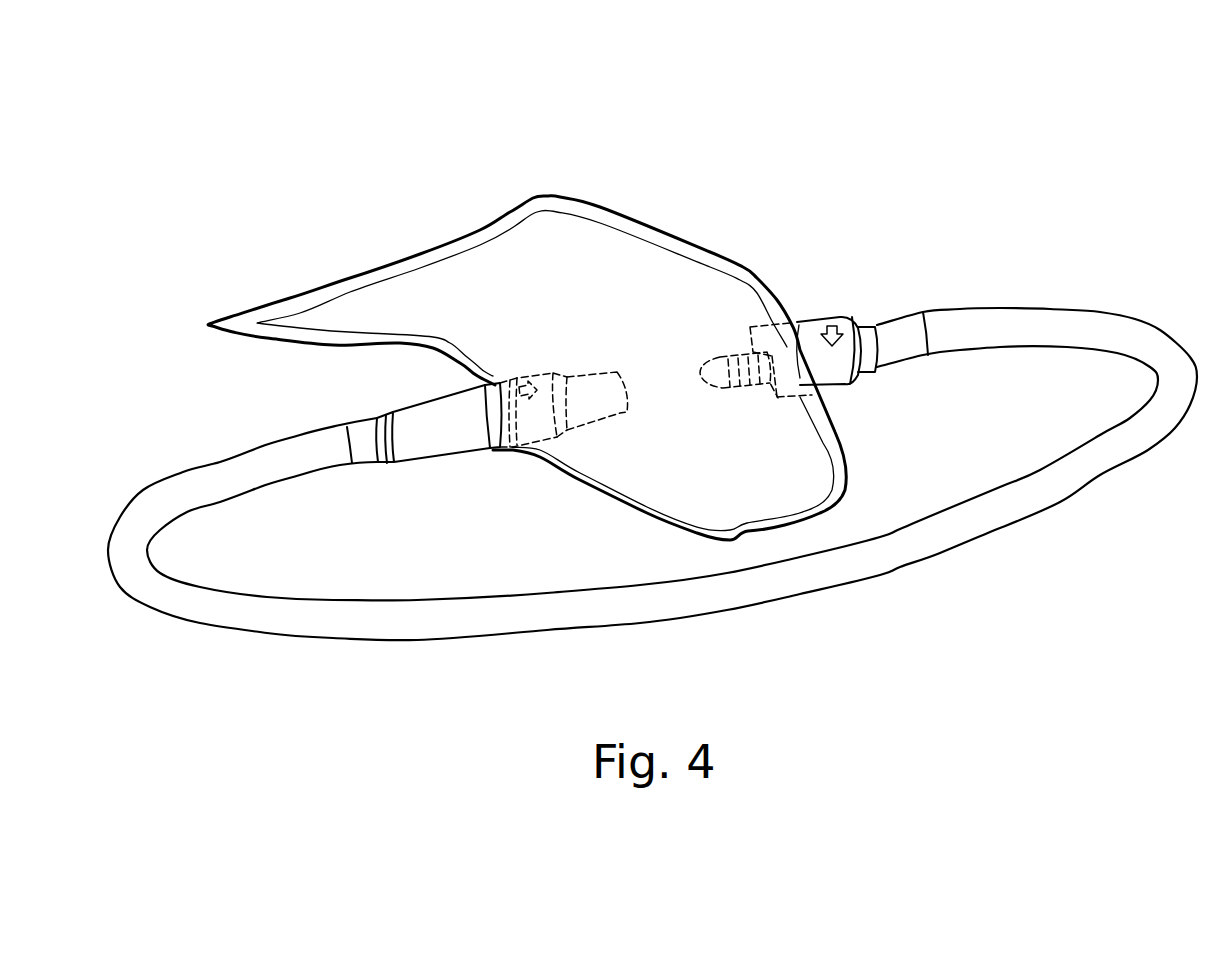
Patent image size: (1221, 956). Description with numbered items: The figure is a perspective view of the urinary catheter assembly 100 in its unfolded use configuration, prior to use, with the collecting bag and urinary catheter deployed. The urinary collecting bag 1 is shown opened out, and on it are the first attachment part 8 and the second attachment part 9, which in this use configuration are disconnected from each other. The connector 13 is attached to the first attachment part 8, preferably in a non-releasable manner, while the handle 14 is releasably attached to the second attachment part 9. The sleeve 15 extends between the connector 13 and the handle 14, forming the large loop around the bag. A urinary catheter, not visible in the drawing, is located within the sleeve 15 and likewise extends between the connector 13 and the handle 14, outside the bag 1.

The urinary catheter assembly 100 is at (652, 366).
The urinary collecting bag 1 is at (707, 247).
The first attachment part 8 is at (533, 430).
The second attachment part 9 is at (785, 312).
The connector 13 is at (425, 443).
The handle 14 is at (850, 317).
The sleeve 15 is at (903, 553).